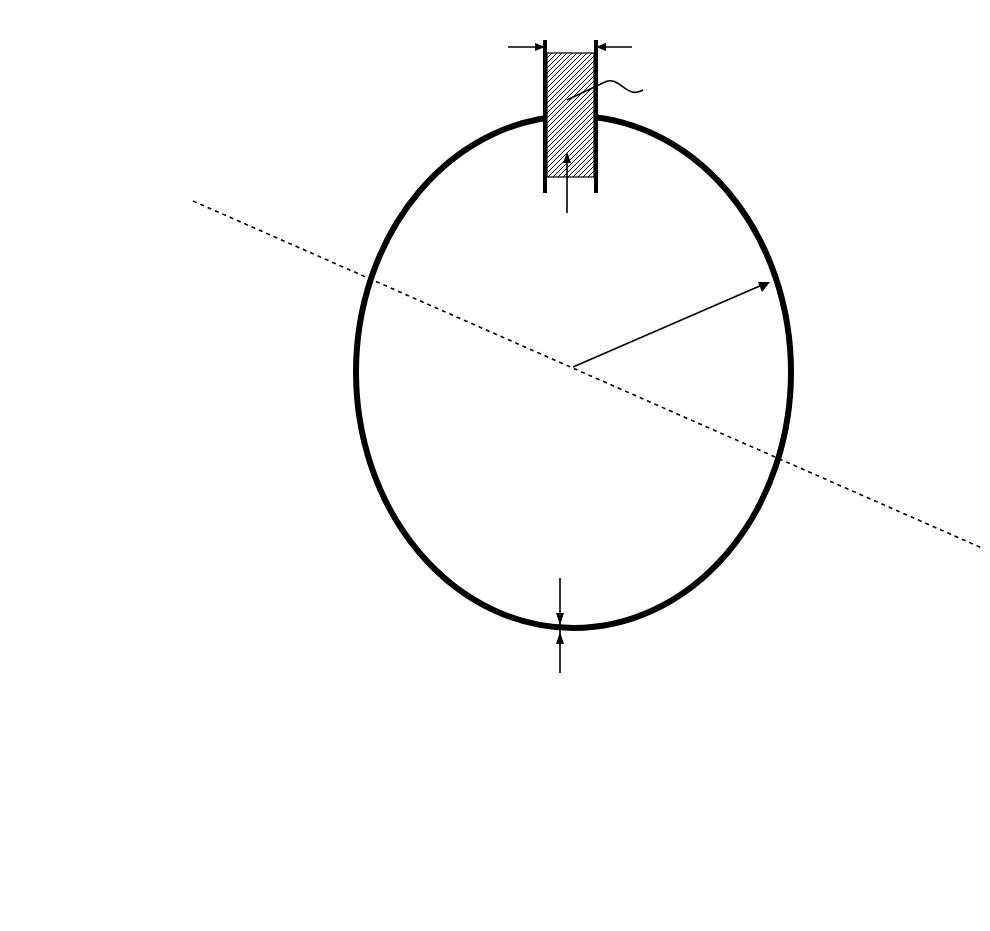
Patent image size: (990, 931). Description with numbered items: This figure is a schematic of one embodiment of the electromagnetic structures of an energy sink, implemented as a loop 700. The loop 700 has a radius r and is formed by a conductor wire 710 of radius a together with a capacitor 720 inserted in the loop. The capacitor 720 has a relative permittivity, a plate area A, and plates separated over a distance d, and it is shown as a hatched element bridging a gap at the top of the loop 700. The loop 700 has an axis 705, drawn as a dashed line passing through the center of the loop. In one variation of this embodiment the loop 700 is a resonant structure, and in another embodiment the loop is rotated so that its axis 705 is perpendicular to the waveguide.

The loop 700 is at (587, 439).
The axis 705 is at (843, 487).
The conductor wire 710 is at (390, 231).
The capacitor 720 is at (547, 80).